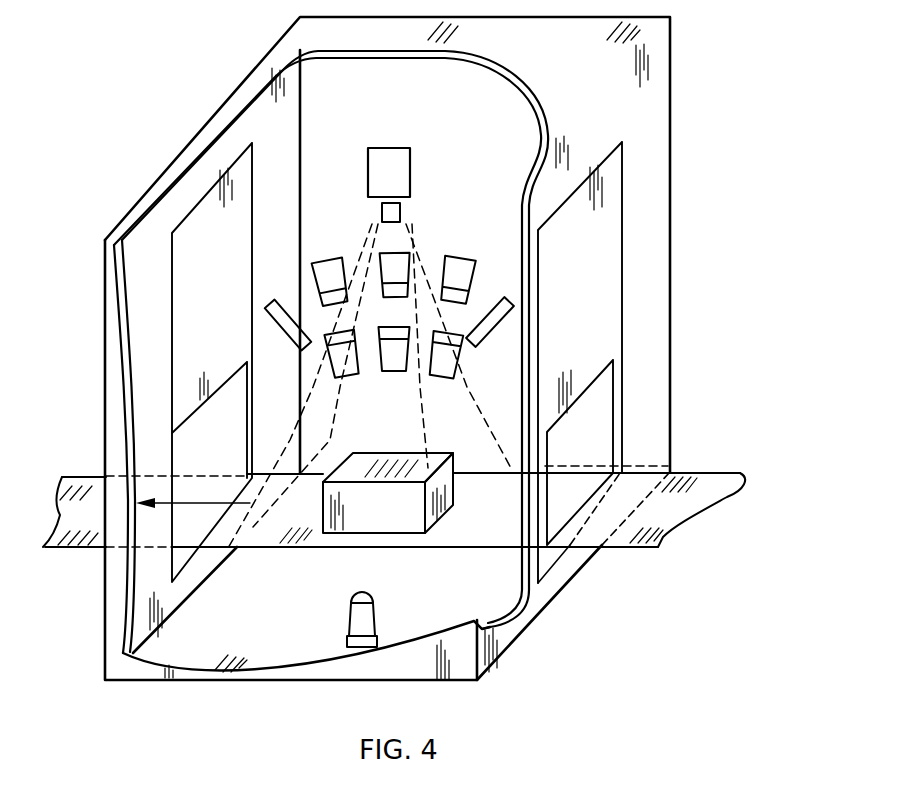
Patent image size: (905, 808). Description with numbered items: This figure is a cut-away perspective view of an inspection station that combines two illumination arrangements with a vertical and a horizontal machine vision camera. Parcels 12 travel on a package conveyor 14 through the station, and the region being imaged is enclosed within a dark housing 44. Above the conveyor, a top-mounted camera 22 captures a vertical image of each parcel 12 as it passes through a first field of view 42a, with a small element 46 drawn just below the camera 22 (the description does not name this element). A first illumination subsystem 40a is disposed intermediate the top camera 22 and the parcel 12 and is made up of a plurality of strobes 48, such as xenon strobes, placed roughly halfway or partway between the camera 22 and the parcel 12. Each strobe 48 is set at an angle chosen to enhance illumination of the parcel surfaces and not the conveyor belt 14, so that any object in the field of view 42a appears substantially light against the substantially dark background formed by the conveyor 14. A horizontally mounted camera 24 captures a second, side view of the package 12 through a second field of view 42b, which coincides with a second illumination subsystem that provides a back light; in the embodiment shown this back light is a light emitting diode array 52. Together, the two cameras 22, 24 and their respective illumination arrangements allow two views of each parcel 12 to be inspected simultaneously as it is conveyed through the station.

The parcel 12 is at (388, 522).
The package conveyor 14 is at (707, 477).
The top-mounted camera 22 is at (410, 191).
The horizontally mounted camera 24 is at (377, 623).
The first illumination subsystem 40a is at (510, 132).
The first field of view 42a is at (412, 438).
The second field of view 42b is at (392, 579).
The dark housing 44 is at (208, 94).
The light emitter 46 is at (360, 208).
The strobes 48 is at (327, 262).
The light emitting diode array 52 is at (401, 321).